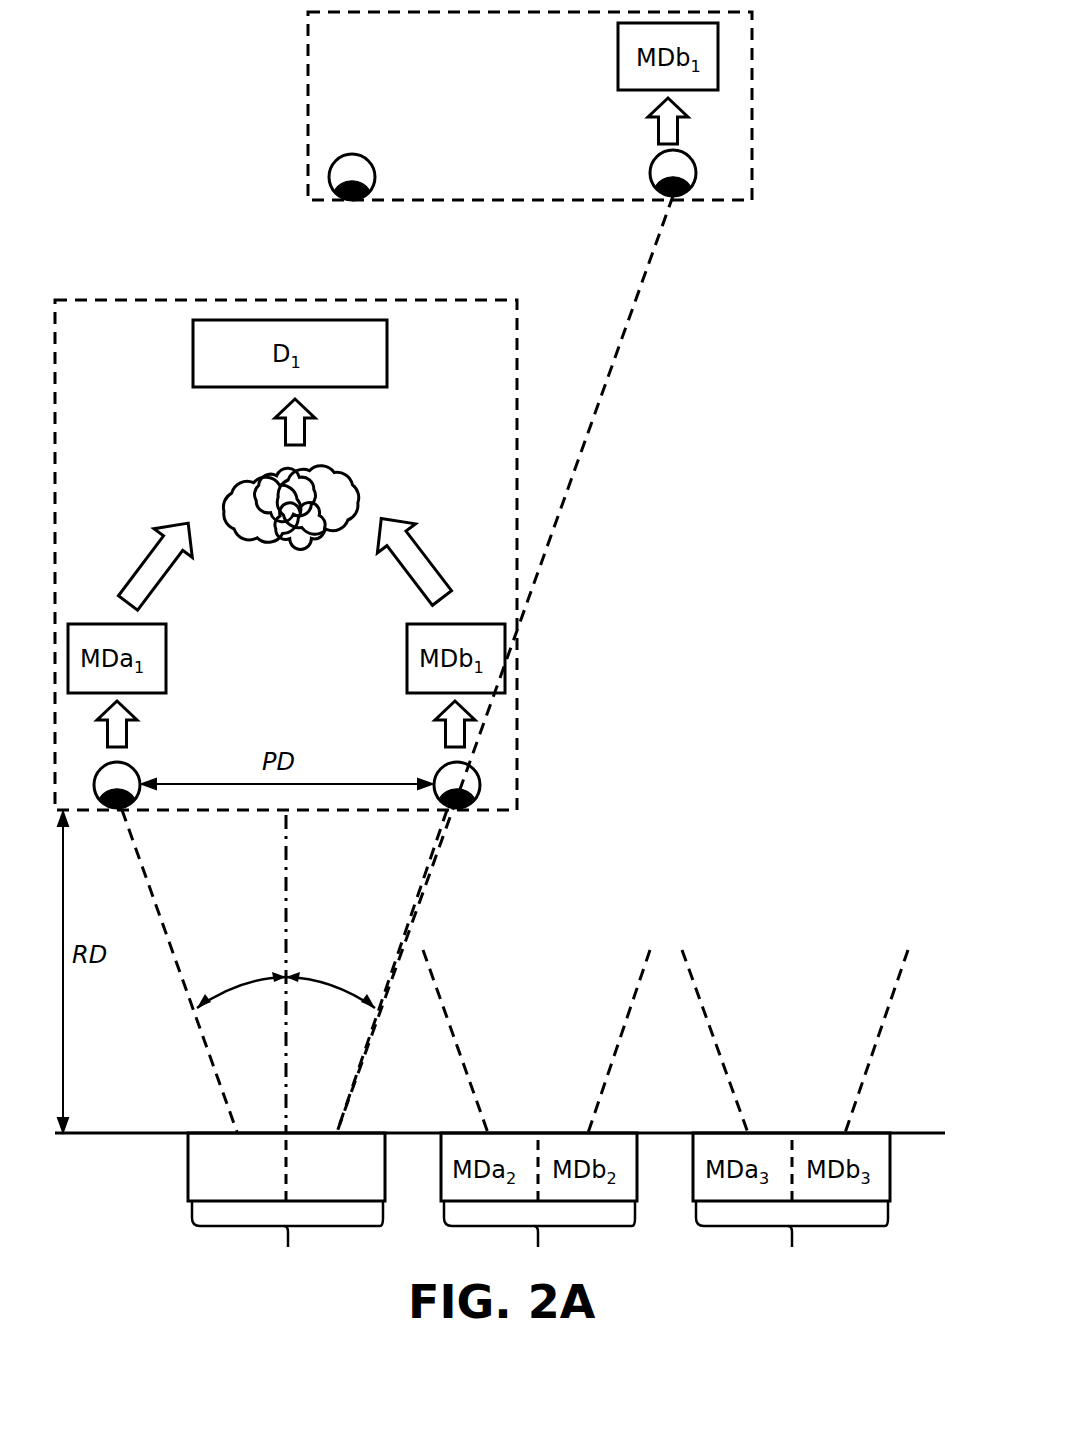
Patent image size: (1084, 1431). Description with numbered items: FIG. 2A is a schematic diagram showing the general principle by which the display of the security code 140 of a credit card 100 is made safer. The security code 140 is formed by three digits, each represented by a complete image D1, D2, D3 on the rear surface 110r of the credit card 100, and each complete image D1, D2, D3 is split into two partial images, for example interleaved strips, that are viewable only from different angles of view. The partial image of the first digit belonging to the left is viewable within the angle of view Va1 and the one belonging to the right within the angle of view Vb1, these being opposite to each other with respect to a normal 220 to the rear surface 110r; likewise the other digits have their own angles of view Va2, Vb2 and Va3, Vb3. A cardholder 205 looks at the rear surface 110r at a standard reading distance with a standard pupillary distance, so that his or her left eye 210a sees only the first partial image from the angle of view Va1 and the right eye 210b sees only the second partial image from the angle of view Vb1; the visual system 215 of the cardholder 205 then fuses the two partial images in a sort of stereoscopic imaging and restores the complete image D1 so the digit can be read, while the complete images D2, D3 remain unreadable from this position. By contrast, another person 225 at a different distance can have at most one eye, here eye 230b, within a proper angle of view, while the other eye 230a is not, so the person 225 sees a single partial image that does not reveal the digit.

The person 225 is at (308, 95).
The eye 230a is at (370, 165).
The eye 230b is at (652, 160).
The cardholder 205 is at (258, 298).
The visual system 215 is at (240, 482).
The left eye 210a is at (130, 763).
The right eye 210b is at (443, 763).
The normal 220 is at (285, 862).
The rear surface 110r is at (170, 1130).
The security code 140 is at (177, 1160).
The credit card 100 is at (140, 1285).
The angle of view Va1 is at (172, 940).
The angle of view Vb1 is at (410, 910).
The angle of view Va2 is at (477, 1087).
The angle of view Vb2 is at (620, 1035).
The angle of view Va3 is at (735, 1087).
The angle of view Vb3 is at (878, 1035).
The complete image D1 is at (288, 1240).
The complete image D2 is at (538, 1242).
The complete image D3 is at (792, 1240).